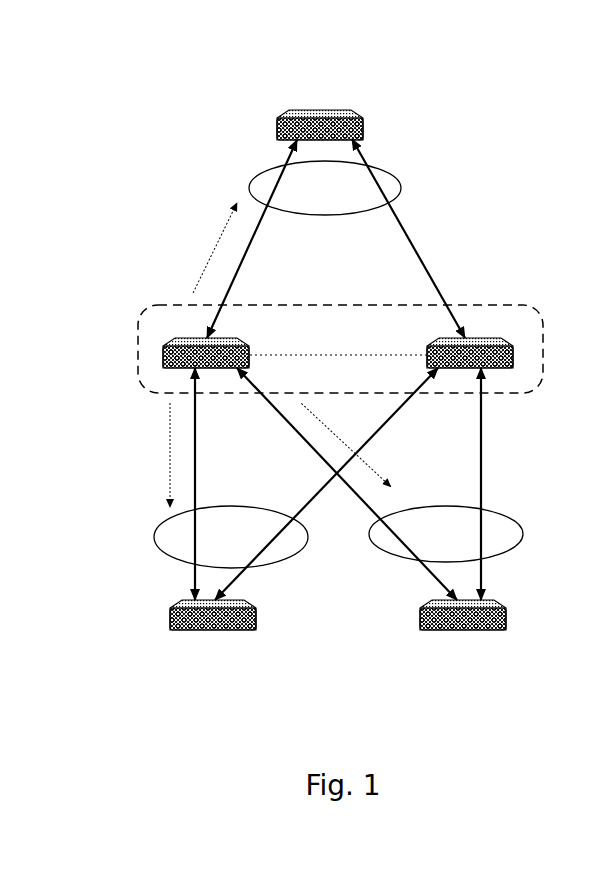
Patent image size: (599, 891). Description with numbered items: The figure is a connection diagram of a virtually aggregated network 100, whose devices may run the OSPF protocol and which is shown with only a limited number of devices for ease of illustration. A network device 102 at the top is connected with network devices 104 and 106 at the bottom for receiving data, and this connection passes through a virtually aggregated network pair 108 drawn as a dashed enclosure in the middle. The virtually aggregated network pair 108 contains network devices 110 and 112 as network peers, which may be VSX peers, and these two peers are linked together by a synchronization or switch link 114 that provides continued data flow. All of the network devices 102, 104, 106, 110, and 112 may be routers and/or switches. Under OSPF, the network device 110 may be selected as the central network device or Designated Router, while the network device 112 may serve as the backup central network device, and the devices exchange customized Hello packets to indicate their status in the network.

The virtually aggregated network 100 is at (128, 61).
The network device 102 is at (288, 112).
The network device 104 is at (195, 632).
The network device 106 is at (462, 632).
The virtually aggregated network pair 108 is at (138, 356).
The network device 110 is at (170, 338).
The network device 112 is at (500, 340).
The synchronization or switch link 114 is at (378, 355).